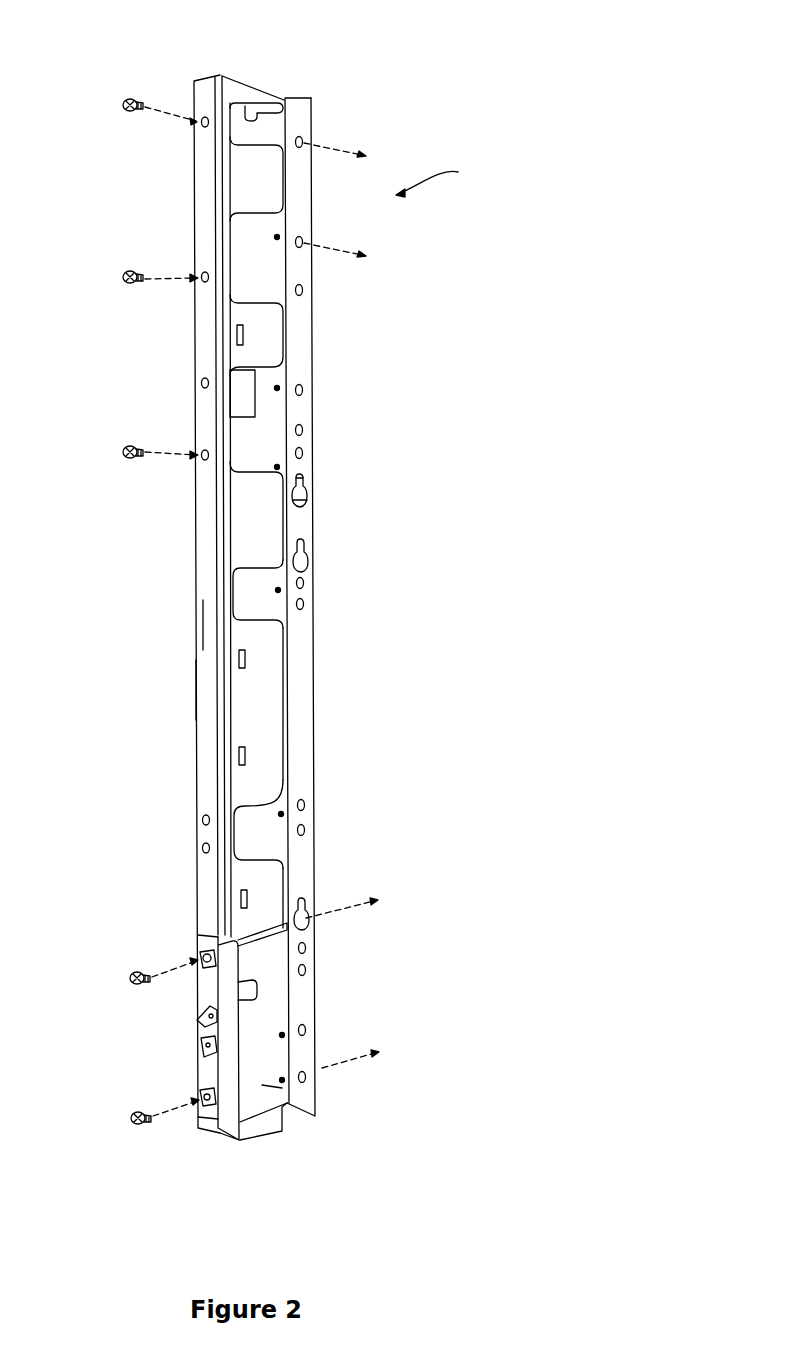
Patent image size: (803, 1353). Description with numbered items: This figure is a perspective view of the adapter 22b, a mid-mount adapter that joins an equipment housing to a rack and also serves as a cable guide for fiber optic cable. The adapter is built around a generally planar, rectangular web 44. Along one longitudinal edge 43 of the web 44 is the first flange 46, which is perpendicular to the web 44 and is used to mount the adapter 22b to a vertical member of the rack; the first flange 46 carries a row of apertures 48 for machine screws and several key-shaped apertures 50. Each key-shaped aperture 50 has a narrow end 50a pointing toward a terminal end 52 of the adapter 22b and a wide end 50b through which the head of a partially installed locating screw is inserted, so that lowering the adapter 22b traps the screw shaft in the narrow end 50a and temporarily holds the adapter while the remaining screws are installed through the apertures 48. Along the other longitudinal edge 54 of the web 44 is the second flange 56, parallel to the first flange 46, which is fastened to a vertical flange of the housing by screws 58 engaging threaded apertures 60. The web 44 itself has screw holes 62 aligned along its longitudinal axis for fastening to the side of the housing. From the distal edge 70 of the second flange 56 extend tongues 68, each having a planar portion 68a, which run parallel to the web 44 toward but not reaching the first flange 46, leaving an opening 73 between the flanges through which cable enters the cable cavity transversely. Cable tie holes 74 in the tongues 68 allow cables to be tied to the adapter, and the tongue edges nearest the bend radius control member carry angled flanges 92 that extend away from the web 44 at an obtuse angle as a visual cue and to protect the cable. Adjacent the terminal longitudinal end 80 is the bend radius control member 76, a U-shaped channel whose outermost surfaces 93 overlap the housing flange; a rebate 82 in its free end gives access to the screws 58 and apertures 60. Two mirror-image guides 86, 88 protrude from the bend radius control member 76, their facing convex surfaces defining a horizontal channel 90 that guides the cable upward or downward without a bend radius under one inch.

The adapter 22b is at (451, 176).
The longitudinal edge 43 is at (287, 97).
The web 44 is at (240, 236).
The first flange 46 is at (313, 307).
The apertures 48 is at (305, 428).
The key-shaped aperture 50 is at (305, 500).
The narrow end of key-shaped aperture 50a is at (300, 480).
The wide end of key-shaped aperture 50b is at (300, 507).
The terminal end 52 is at (203, 82).
The other longitudinal edge 54 is at (197, 690).
The second flange 56 is at (207, 627).
The screws 58 is at (125, 268).
The threaded apertures 60 is at (203, 126).
The screw holes 62 is at (278, 240).
The tongues 68 is at (245, 88).
The planar portion 68a is at (242, 512).
The distal edge 70 is at (220, 75).
The opening 73 is at (287, 221).
The cable tie holes 74 is at (236, 333).
The bend radius control member 76 is at (240, 1132).
The terminal longitudinal end 80 is at (280, 1088).
The rebate 82 is at (200, 1086).
The first guide 86 is at (197, 1012).
The second guide 88 is at (200, 1040).
The channel 90 is at (196, 1023).
The angled flange 92 is at (290, 930).
The outermost surfaces 93 is at (208, 1070).